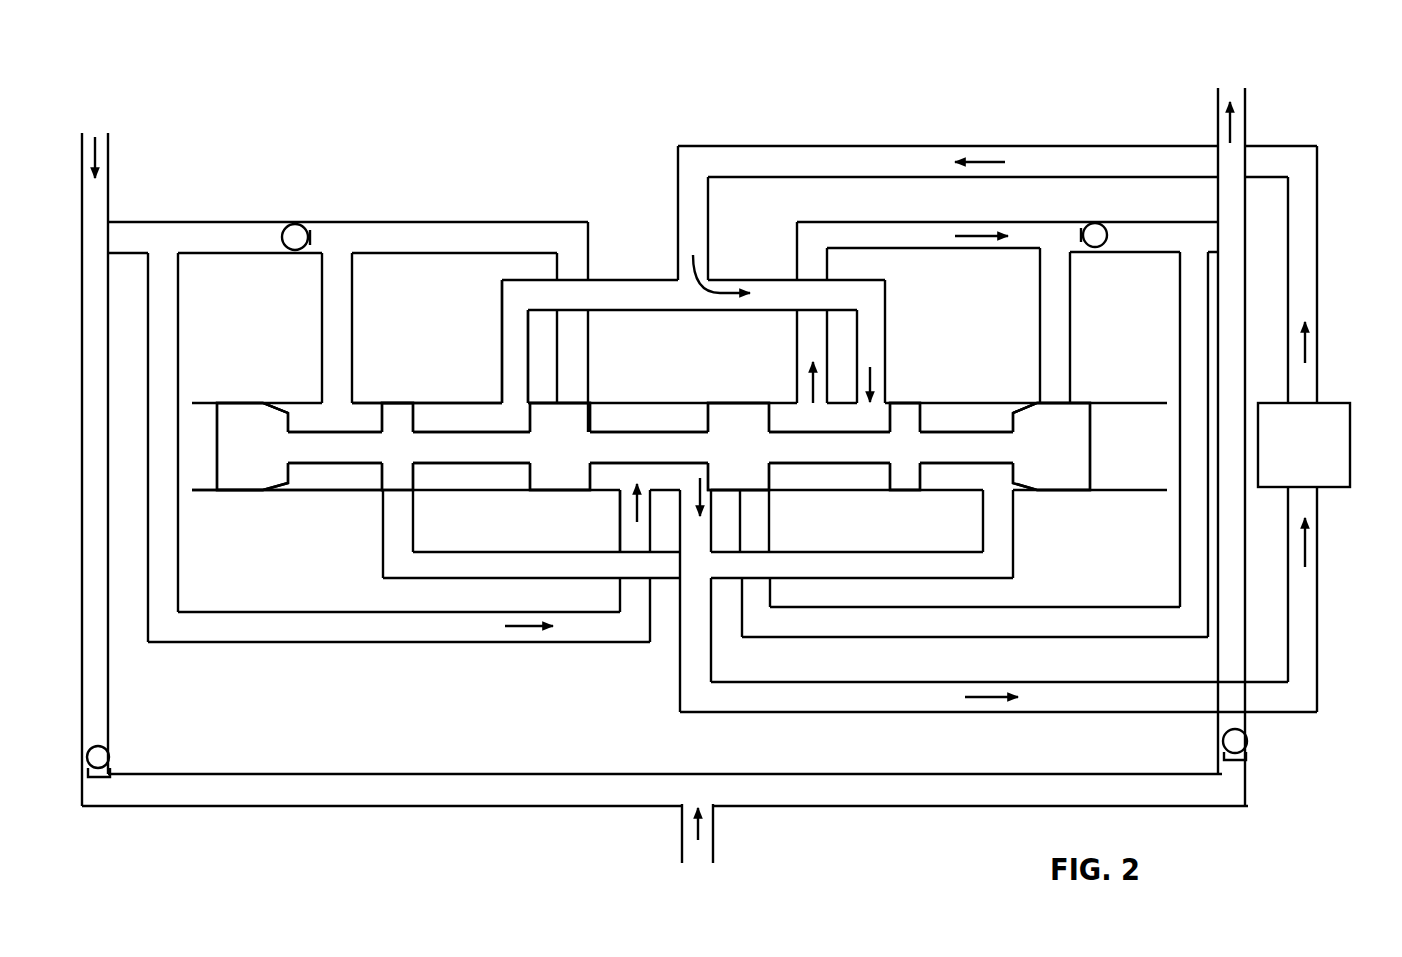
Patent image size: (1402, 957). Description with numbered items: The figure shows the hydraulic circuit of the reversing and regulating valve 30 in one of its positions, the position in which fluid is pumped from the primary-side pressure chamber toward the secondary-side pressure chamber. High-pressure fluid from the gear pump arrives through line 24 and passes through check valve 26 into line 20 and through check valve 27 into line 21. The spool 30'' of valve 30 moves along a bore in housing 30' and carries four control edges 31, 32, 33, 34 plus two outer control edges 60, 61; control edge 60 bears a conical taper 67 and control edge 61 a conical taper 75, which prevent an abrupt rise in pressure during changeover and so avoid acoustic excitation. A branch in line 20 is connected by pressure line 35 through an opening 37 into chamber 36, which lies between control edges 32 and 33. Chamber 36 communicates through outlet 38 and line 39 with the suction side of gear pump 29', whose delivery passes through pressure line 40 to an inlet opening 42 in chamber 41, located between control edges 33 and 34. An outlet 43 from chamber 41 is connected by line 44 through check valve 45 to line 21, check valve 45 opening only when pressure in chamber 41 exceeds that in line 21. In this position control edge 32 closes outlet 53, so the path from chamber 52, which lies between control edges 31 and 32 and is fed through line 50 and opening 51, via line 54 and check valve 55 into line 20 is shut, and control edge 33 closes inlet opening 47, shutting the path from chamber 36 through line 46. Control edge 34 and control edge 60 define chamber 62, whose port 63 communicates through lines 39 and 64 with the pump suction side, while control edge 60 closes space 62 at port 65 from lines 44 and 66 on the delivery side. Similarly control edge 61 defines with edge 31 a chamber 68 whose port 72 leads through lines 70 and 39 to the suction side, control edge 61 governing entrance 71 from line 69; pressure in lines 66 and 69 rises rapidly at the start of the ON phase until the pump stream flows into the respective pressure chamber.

The line 20 is at (109, 562).
The line 21 is at (1240, 363).
The line 24 is at (386, 786).
The check valve 26 is at (124, 760).
The check valve 27 is at (1216, 743).
The gear pump 29' is at (1315, 481).
The reversing and regulating valve 30 is at (653, 407).
The housing 30' is at (650, 388).
The spool 30'' is at (650, 451).
The control edge 31 is at (405, 402).
The control edge 32 is at (575, 418).
The control edge 33 is at (735, 402).
The control edge 34 is at (912, 423).
The pressure line 35 is at (467, 641).
The chamber 36 is at (652, 507).
The opening 37 is at (619, 498).
The outlet 38 is at (686, 495).
The line 39 is at (700, 535).
The pressure line 40 is at (812, 148).
The chamber 41 is at (845, 491).
The inlet opening 42 is at (895, 402).
The outlet 43 is at (797, 400).
The line 44 is at (912, 233).
The check valve 45 is at (1094, 216).
The line 46 is at (1090, 617).
The inlet opening 47 is at (764, 491).
The line 50 is at (624, 284).
The opening 51 is at (498, 400).
The chamber 52 is at (478, 491).
The outlet 53 is at (584, 400).
The line 54 is at (516, 223).
The check valve 55 is at (308, 216).
The control edge 60 is at (1076, 405).
The control edge 61 is at (248, 402).
The chamber 62 is at (918, 491).
The port 63 is at (1004, 494).
The line 64 is at (942, 550).
The port 65 is at (1040, 400).
The line 66 is at (1067, 298).
The conical taper 67 is at (1036, 414).
The chamber 68 is at (318, 490).
The line 69 is at (346, 296).
The line 70 is at (535, 572).
The entrance 71 is at (336, 396).
The port 72 is at (382, 491).
The conical taper 75 is at (272, 414).